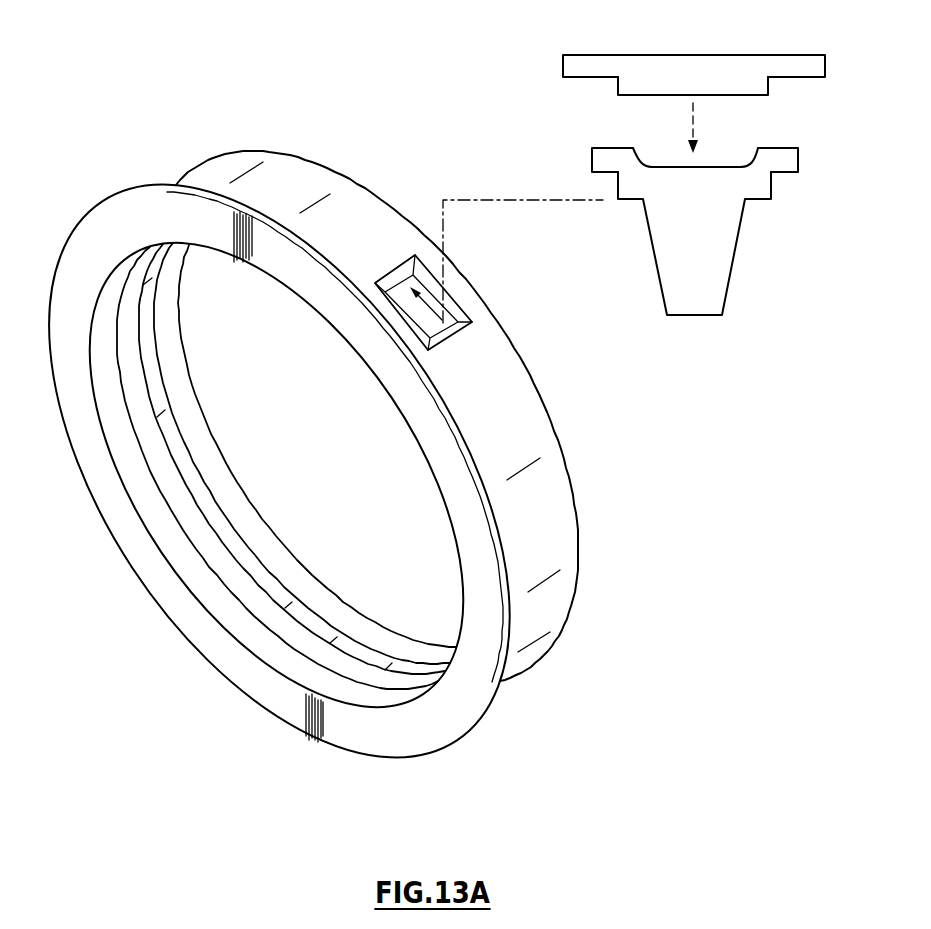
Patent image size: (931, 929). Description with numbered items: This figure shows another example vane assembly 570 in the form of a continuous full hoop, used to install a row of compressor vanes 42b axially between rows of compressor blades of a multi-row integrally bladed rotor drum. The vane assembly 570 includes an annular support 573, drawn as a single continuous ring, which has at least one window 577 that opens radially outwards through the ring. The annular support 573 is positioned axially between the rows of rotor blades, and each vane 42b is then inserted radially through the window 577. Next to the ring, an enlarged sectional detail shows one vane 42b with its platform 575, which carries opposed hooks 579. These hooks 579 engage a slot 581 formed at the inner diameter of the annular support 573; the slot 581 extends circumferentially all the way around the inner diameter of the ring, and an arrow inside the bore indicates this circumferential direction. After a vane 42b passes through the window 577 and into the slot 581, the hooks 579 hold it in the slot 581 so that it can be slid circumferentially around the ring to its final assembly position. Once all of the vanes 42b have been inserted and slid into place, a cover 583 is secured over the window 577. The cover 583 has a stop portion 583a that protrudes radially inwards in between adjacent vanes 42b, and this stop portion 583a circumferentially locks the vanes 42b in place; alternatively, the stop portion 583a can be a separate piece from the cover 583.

The vane assembly 570 is at (84, 618).
The annular support 573 is at (470, 680).
The platform 575 is at (622, 143).
The window 577 is at (445, 338).
The hooks 579 is at (592, 163).
The slot 581 is at (278, 617).
The cover 583 is at (586, 49).
The stop portion 583a is at (777, 87).
The compressor vane 42b is at (658, 299).